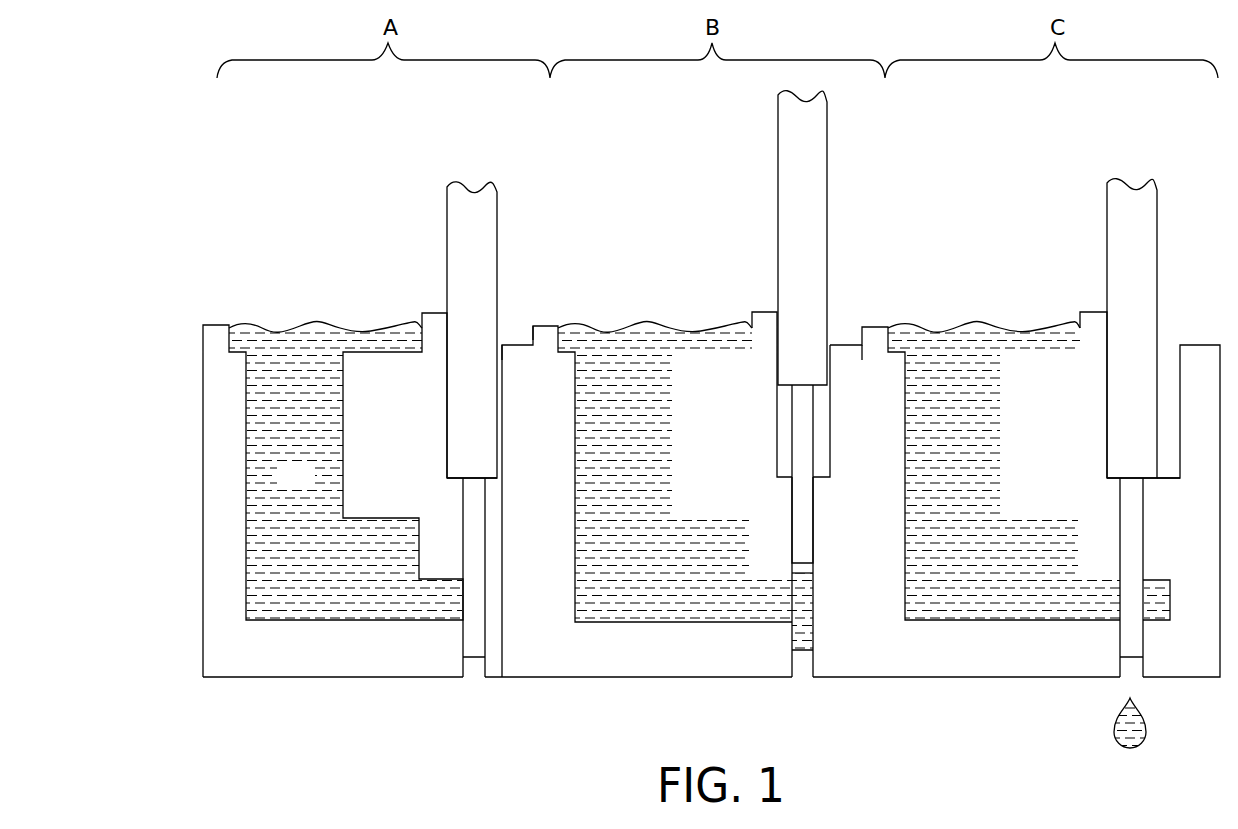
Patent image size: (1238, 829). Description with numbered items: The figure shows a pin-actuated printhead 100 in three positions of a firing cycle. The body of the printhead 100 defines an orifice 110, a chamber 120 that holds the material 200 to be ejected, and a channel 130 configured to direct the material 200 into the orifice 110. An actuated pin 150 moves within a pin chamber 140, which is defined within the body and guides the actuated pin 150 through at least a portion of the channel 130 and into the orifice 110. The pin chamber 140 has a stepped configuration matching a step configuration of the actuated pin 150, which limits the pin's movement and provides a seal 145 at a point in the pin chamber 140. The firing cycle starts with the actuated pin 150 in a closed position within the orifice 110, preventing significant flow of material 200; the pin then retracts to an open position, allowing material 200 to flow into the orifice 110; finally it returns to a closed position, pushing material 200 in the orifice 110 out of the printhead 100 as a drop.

The printhead 100 is at (343, 177).
The orifice 110 is at (473, 670).
The chamber 120 is at (292, 371).
The channel 130 is at (408, 602).
The pin chamber 140 is at (510, 338).
The seal 145 is at (438, 480).
The actuated pin 150 is at (483, 183).
The material 200 is at (1115, 725).